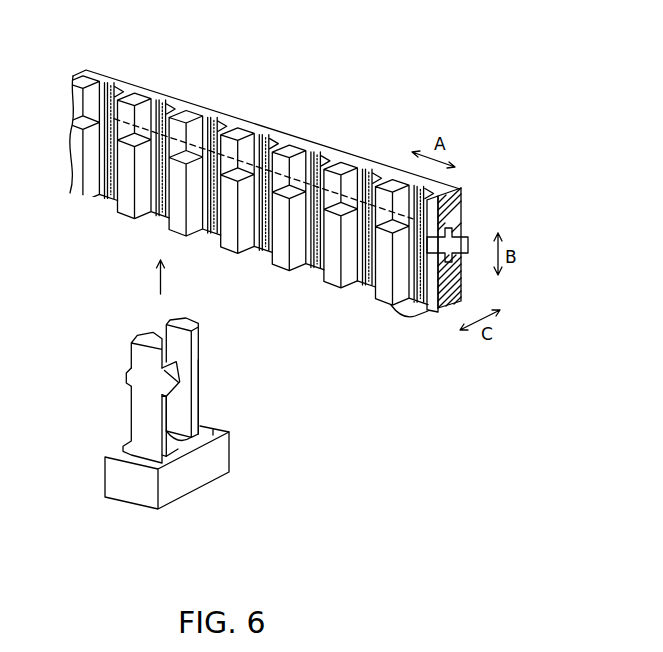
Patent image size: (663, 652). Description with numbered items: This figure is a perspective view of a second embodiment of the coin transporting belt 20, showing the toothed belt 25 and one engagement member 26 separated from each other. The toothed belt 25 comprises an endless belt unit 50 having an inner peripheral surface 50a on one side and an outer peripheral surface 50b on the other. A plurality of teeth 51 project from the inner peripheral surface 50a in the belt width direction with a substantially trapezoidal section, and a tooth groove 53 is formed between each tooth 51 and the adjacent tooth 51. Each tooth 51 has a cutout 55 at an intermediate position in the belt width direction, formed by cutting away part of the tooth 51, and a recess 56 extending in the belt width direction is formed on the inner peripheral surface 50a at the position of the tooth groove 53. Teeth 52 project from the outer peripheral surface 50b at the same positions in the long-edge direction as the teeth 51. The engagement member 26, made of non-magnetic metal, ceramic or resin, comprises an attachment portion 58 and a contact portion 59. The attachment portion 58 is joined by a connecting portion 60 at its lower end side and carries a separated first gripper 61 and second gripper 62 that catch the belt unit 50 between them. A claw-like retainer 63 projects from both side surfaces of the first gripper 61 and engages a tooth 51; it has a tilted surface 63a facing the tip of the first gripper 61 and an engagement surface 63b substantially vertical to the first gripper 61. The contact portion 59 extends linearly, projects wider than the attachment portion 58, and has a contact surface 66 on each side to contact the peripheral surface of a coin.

The coin transporting belt 20 is at (277, 172).
The toothed belt 25 is at (277, 191).
The engagement member 26 is at (166, 431).
The belt unit 50 is at (253, 130).
The inner peripheral surface 50a is at (270, 143).
The outer peripheral surface 50b is at (312, 147).
The tooth 51 is at (412, 311).
The tooth 52 is at (461, 229).
The tooth groove 53 is at (363, 288).
The cutout 55 is at (382, 217).
The recess 56 is at (364, 172).
The attachment portion 58 is at (202, 408).
The contact portion 59 is at (226, 442).
The connecting portion 60 is at (178, 450).
The first gripper 61 is at (140, 418).
The second gripper 62 is at (202, 341).
The retainer 63 is at (128, 378).
The tilted surface 63a is at (173, 373).
The engagement surface 63b is at (181, 395).
The contact surface 66 is at (192, 474).